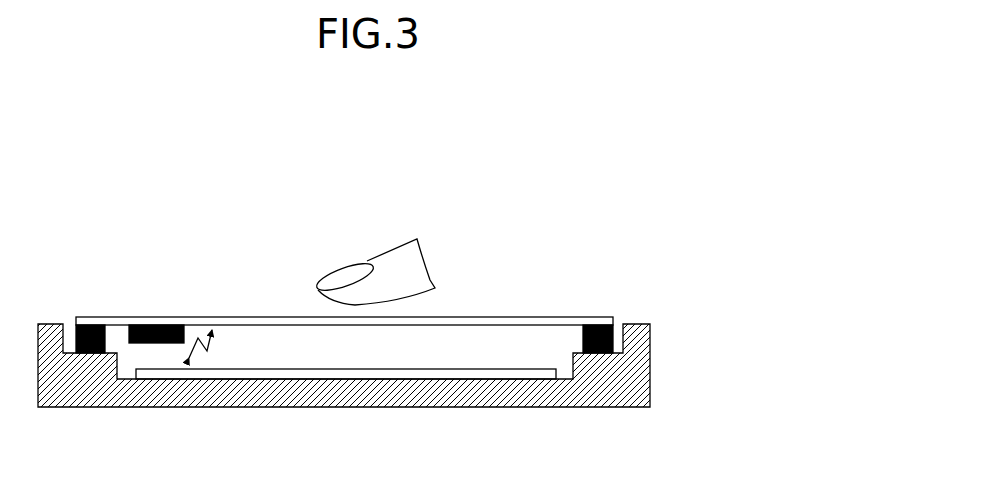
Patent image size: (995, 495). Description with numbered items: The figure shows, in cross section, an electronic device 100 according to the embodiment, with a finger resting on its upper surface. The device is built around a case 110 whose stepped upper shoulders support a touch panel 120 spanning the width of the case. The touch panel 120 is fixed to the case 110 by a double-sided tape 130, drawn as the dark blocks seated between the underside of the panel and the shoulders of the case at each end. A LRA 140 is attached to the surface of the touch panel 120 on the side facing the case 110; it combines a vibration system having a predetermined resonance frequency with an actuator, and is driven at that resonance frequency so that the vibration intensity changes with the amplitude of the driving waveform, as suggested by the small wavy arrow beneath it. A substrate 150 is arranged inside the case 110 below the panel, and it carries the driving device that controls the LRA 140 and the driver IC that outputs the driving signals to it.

The electronic device 100 is at (680, 149).
The case 110 is at (620, 407).
The touch panel 120 is at (475, 313).
The double-sided tape 130 is at (77, 317).
The LRA 140 is at (157, 325).
The substrate 150 is at (547, 368).